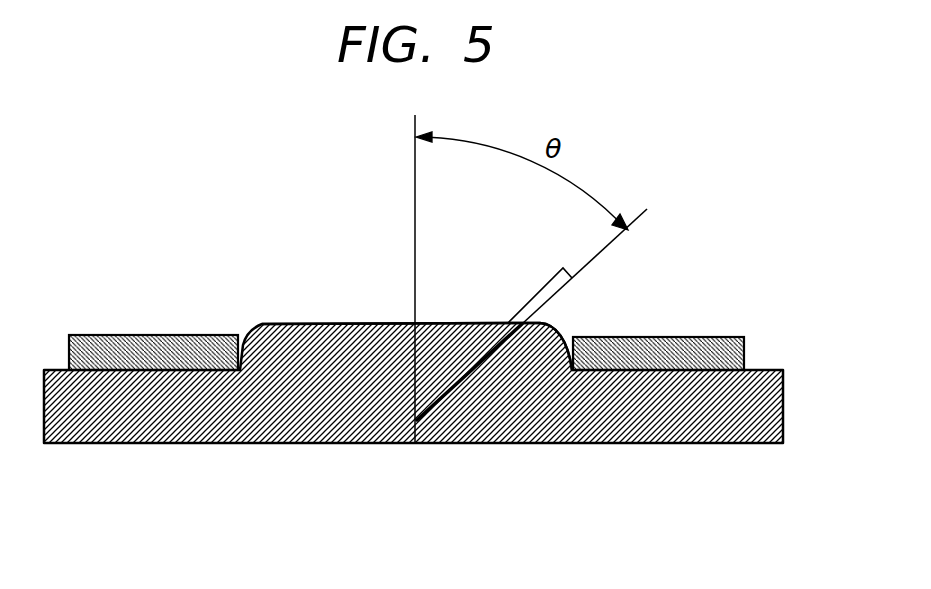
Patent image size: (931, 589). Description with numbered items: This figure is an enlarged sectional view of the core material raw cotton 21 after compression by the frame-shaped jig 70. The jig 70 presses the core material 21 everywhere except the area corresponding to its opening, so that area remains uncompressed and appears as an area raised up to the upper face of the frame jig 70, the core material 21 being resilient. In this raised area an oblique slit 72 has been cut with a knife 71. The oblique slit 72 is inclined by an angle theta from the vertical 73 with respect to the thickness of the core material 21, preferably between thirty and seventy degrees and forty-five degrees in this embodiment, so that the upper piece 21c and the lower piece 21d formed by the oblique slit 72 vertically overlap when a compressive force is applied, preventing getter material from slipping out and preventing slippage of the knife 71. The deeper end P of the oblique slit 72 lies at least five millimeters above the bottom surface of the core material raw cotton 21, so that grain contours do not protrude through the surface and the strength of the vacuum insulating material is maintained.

The core material raw cotton 21 is at (511, 412).
The upper piece 21c is at (483, 323).
The lower piece 21d is at (548, 323).
The jig 70 is at (698, 346).
The knife 71 is at (598, 254).
The oblique slit 72 is at (465, 368).
The vertical 73 is at (415, 235).
The deeper end of the oblique slit P is at (415, 443).